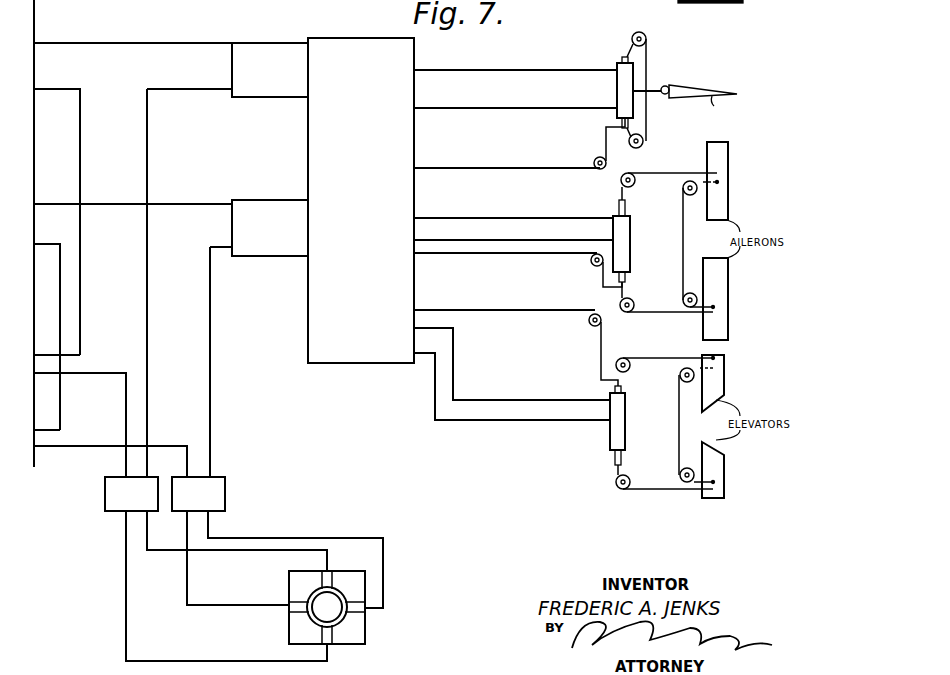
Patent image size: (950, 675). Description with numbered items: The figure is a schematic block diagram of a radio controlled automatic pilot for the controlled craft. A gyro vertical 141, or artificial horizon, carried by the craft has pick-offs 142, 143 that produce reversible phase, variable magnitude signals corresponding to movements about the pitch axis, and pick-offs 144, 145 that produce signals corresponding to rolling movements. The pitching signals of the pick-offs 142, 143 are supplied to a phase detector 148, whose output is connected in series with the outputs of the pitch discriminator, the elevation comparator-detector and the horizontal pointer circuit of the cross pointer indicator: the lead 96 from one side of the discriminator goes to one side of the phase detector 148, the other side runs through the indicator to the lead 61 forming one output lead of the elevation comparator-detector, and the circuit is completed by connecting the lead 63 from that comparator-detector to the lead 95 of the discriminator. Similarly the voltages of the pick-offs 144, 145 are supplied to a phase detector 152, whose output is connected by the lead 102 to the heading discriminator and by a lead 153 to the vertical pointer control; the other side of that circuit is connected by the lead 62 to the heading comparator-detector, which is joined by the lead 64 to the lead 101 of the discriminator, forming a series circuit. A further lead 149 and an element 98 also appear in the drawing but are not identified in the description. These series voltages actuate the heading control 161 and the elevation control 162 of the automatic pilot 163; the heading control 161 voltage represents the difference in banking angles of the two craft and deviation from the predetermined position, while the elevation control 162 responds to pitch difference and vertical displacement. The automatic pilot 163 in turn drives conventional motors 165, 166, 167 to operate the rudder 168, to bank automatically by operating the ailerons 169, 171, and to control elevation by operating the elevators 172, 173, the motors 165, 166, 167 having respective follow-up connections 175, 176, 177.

The lead 62 is at (84, 42).
The lead 64 is at (73, 88).
The lead 61 is at (52, 203).
The lead 63 is at (48, 243).
The lead 101 is at (48, 355).
The lead 102 is at (70, 374).
The lead 95 is at (54, 431).
The lead 96 is at (50, 447).
The conductor bar 98 is at (712, 3).
The phase detector 148 is at (105, 498).
The phase detector 152 is at (226, 488).
The lead 153 is at (149, 248).
The conductor 149 is at (212, 360).
The heading control 161 is at (269, 42).
The elevation control 162 is at (266, 257).
The automatic pilot 163 is at (352, 364).
The motor 165 is at (617, 88).
The motor 166 is at (626, 244).
The motor 167 is at (618, 418).
The rudder 168 is at (723, 91).
The aileron 169 is at (729, 190).
The aileron 171 is at (724, 293).
The elevator 172 is at (718, 381).
The elevator 173 is at (718, 466).
The follow-up connection 175 is at (530, 168).
The follow-up connection 176 is at (512, 255).
The follow-up connection 177 is at (518, 315).
The gyro vertical 141 is at (362, 638).
The pick-off 142 is at (300, 606).
The pick-off 143 is at (353, 612).
The pick-off 144 is at (325, 578).
The pick-off 145 is at (331, 640).